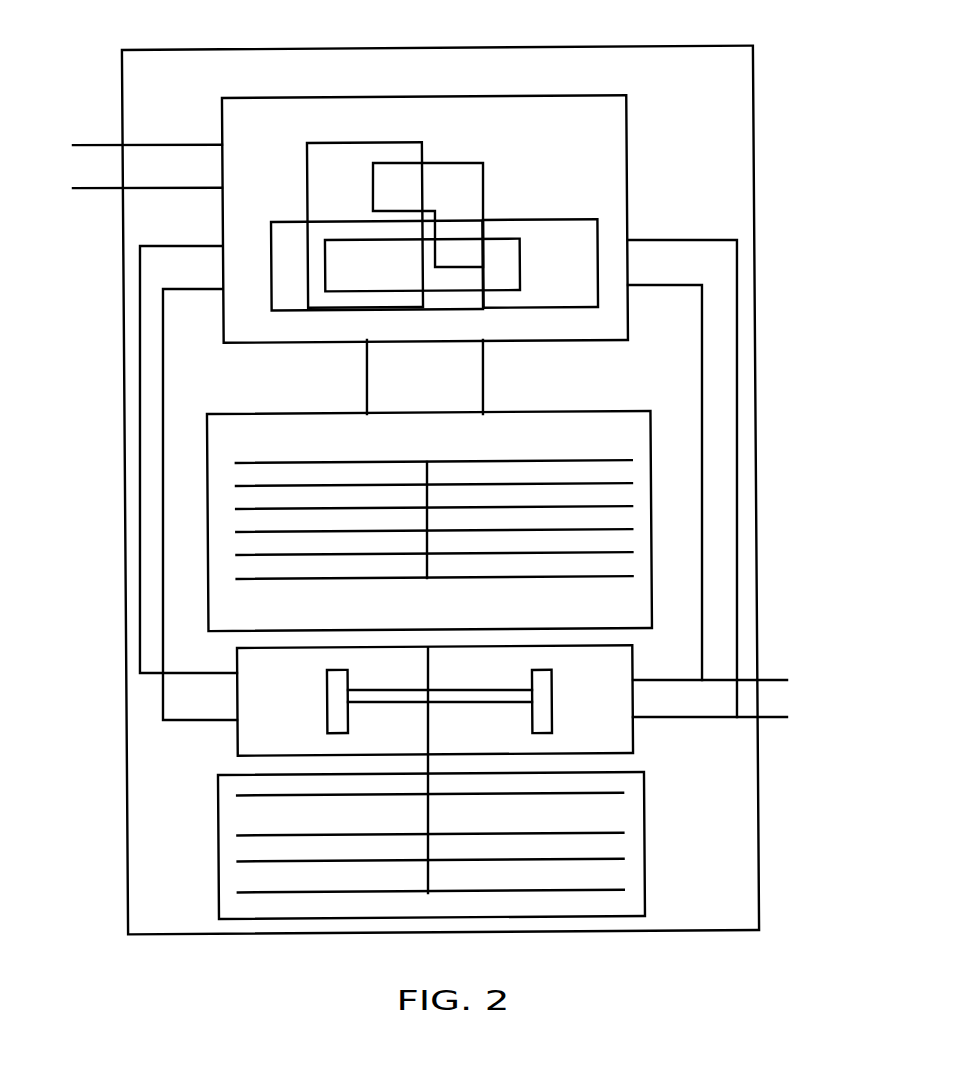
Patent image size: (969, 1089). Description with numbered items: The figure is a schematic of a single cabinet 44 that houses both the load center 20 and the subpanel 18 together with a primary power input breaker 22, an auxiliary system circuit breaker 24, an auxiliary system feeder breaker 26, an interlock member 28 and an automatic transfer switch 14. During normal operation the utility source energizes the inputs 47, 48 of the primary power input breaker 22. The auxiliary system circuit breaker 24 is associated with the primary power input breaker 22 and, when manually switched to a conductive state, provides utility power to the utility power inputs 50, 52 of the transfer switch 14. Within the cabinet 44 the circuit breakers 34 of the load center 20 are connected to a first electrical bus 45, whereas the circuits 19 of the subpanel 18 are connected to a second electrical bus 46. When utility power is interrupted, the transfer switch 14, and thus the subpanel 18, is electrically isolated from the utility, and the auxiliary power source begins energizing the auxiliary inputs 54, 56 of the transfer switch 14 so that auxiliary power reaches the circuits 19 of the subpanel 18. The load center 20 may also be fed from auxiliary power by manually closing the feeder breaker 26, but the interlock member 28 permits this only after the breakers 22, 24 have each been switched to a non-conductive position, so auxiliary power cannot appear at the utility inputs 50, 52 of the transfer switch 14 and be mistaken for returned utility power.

The single cabinet 44 is at (443, 43).
The input of the primary power input breaker 47 is at (150, 145).
The input of the primary power input breaker 48 is at (150, 188).
The primary power input breaker 22 is at (367, 142).
The auxiliary system circuit breaker 24 is at (292, 221).
The auxiliary system feeder breaker 26 is at (545, 219).
The interlock member 28 is at (487, 183).
The load center 20 is at (434, 498).
The circuit breakers of the load center 34 is at (520, 481).
The first electrical bus 45 is at (423, 473).
The utility power input of the transfer switch 50 is at (197, 671).
The utility power input of the transfer switch 52 is at (198, 721).
The auxiliary input of the transfer switch 54 is at (659, 682).
The auxiliary input of the transfer switch 56 is at (706, 720).
The transfer switch 14 is at (240, 730).
The second electrical bus 46 is at (426, 807).
The subpanel 18 is at (398, 845).
The circuits of the subpanel 19 is at (453, 795).